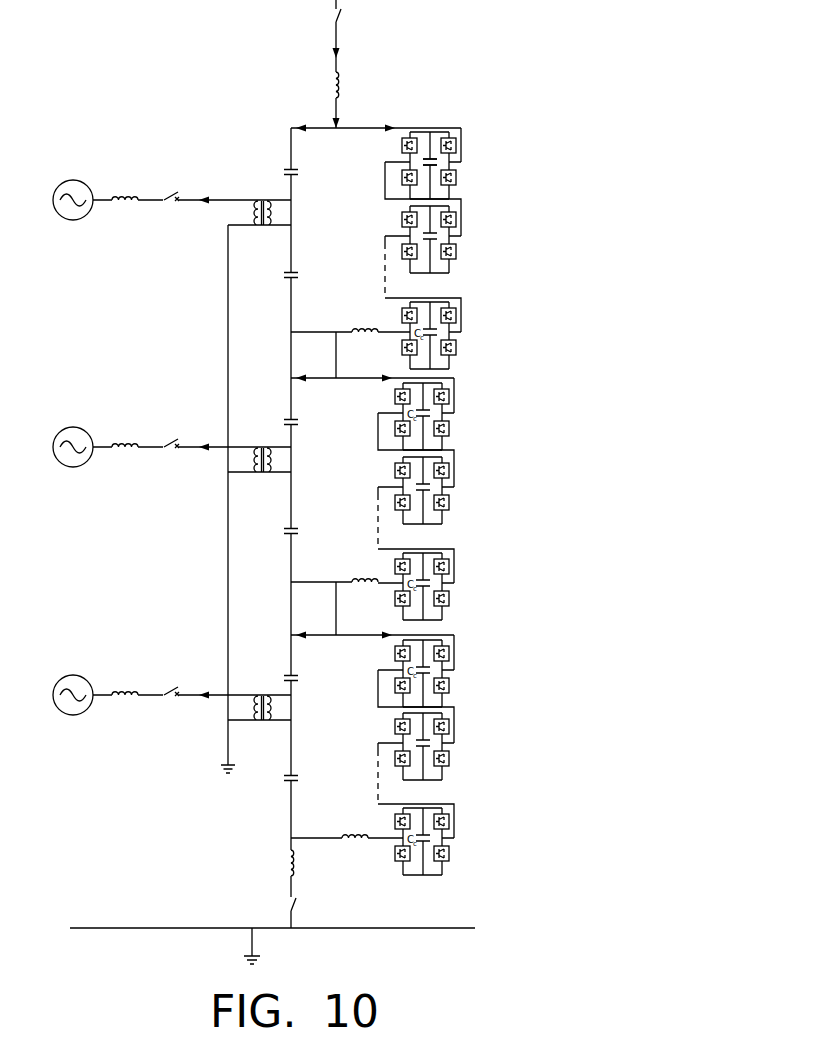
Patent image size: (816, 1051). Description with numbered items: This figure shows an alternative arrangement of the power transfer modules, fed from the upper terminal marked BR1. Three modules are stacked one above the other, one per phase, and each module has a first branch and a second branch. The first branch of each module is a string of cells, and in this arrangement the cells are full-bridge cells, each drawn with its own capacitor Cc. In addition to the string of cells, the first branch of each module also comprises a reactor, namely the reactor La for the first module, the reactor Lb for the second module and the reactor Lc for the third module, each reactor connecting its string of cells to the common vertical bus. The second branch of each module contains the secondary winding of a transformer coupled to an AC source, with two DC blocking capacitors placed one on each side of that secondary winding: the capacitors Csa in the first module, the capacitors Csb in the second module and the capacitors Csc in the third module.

The breaker / feed line BR1 is at (376, 64).
The DC blocking capacitor Csa is at (264, 223).
The DC blocking capacitor Csb is at (267, 479).
The DC blocking capacitor Csc is at (267, 732).
The reactor La is at (338, 345).
The reactor Lb is at (334, 594).
The reactor Lc is at (334, 850).
The cell capacitor Cc is at (425, 165).